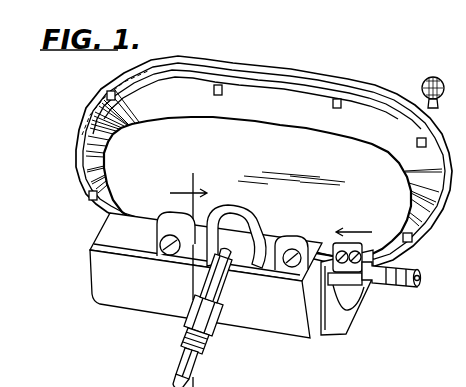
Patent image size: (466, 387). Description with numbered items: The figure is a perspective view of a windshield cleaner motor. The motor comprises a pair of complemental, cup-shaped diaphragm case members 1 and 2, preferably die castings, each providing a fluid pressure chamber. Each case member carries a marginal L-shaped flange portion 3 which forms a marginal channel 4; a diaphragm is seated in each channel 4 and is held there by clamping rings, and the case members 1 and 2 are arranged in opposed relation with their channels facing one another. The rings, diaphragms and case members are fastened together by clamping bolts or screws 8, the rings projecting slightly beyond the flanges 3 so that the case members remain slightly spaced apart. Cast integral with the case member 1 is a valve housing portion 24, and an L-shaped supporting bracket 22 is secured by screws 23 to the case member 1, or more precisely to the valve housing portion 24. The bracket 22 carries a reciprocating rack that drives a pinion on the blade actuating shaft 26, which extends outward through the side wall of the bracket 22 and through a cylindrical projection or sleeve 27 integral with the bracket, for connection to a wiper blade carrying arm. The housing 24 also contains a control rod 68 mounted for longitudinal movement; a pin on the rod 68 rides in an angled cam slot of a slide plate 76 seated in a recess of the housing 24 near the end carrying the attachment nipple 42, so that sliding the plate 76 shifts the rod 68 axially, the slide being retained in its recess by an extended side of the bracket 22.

The diaphragm case member 1 is at (108, 152).
The diaphragm case member 2 is at (212, 62).
The marginal L-shaped flange portion 3 is at (193, 173).
The marginal channel 4 is at (438, 78).
The clamping bolts or screws 8 is at (337, 100).
The supporting bracket 22 is at (170, 263).
The screws 23 is at (165, 238).
The valve housing portion 24 is at (270, 228).
The blade actuating shaft 26 is at (177, 354).
The cylindrical projection or sleeve 27 is at (220, 308).
The attachment nipple 42 is at (408, 277).
The control rod 68 is at (343, 290).
The slide plate 76 is at (333, 310).